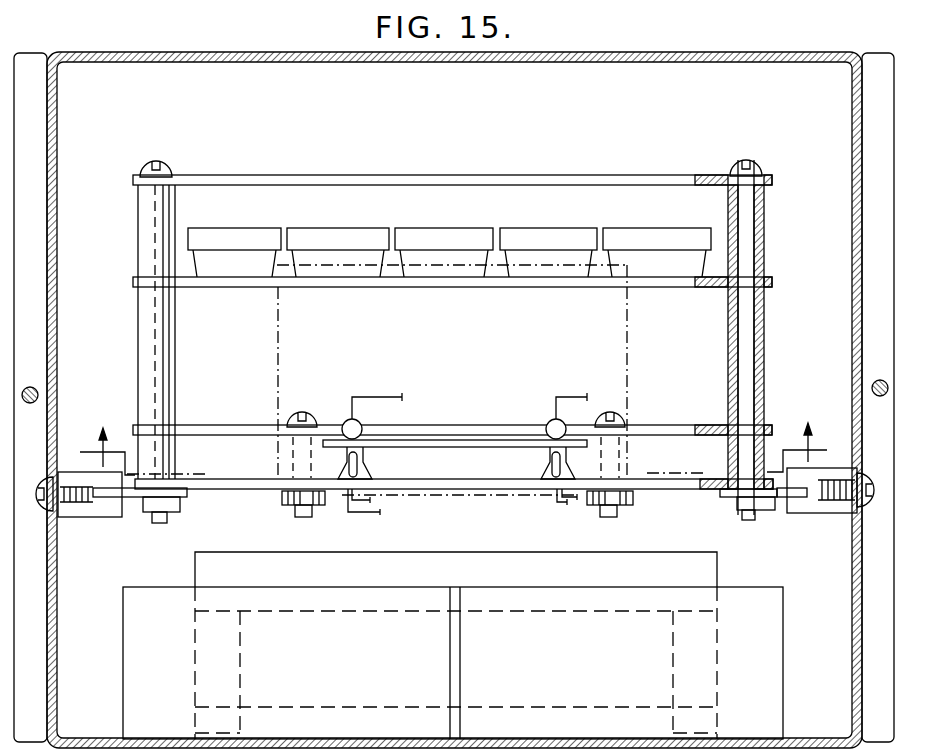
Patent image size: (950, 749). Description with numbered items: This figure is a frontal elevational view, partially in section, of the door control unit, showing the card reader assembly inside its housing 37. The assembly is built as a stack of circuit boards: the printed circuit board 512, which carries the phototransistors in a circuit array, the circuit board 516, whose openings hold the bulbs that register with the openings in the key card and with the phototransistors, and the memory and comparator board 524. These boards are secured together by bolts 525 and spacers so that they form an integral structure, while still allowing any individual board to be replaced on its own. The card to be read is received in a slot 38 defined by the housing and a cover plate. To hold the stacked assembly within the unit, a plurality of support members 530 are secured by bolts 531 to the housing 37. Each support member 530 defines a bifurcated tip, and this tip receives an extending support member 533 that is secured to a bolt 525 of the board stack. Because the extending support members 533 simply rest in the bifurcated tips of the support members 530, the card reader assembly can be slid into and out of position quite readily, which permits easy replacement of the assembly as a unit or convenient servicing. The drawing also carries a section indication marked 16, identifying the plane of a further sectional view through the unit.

The housing 37 is at (470, 58).
The bolt 525 is at (170, 167).
The printed circuit board 512 is at (198, 428).
The memory and comparator board 524 is at (198, 283).
The slot 38 is at (412, 437).
The circuit board 516 is at (455, 454).
The section line 16- 16 is at (457, 449).
The support member 530 is at (95, 517).
The extending support member 533 is at (125, 497).
The bolt 531 is at (48, 505).